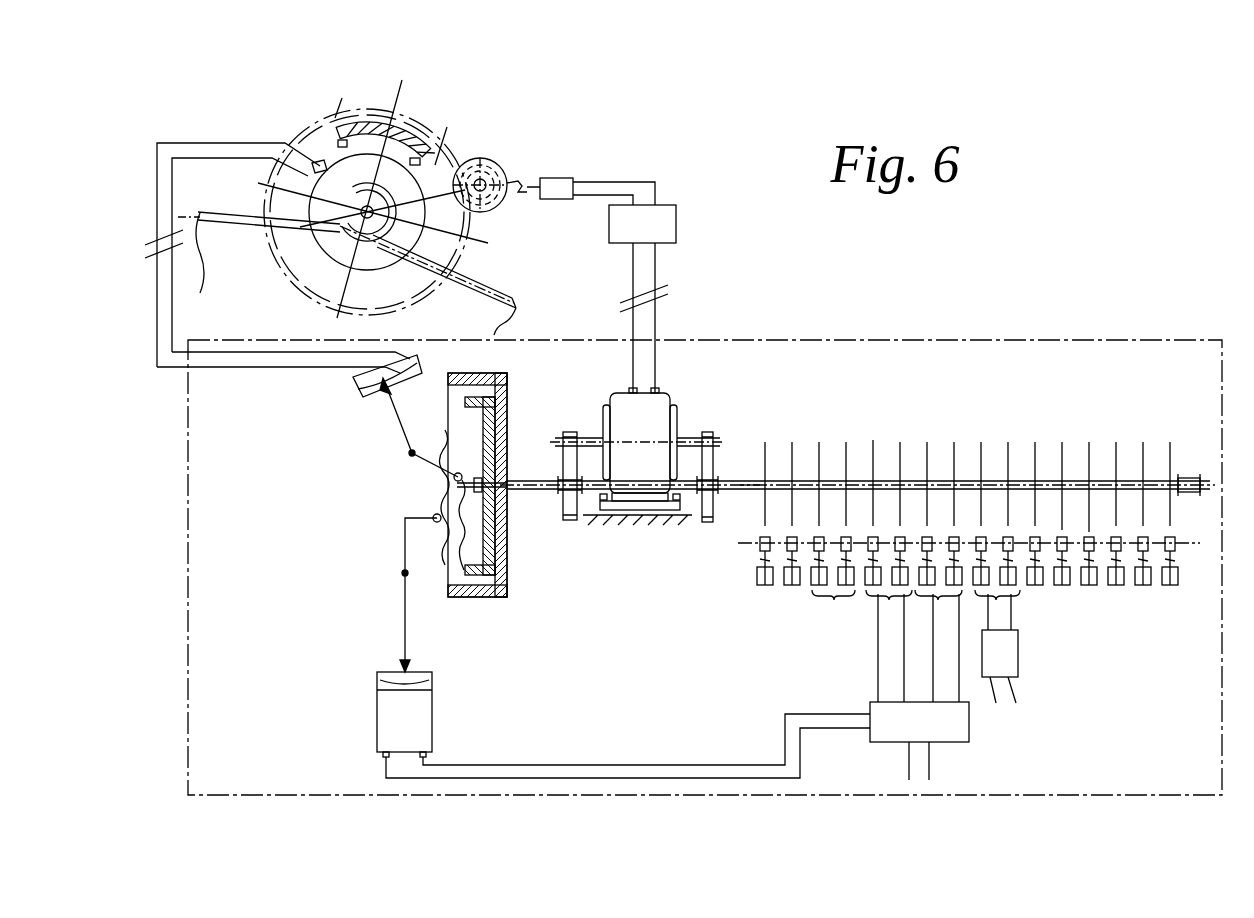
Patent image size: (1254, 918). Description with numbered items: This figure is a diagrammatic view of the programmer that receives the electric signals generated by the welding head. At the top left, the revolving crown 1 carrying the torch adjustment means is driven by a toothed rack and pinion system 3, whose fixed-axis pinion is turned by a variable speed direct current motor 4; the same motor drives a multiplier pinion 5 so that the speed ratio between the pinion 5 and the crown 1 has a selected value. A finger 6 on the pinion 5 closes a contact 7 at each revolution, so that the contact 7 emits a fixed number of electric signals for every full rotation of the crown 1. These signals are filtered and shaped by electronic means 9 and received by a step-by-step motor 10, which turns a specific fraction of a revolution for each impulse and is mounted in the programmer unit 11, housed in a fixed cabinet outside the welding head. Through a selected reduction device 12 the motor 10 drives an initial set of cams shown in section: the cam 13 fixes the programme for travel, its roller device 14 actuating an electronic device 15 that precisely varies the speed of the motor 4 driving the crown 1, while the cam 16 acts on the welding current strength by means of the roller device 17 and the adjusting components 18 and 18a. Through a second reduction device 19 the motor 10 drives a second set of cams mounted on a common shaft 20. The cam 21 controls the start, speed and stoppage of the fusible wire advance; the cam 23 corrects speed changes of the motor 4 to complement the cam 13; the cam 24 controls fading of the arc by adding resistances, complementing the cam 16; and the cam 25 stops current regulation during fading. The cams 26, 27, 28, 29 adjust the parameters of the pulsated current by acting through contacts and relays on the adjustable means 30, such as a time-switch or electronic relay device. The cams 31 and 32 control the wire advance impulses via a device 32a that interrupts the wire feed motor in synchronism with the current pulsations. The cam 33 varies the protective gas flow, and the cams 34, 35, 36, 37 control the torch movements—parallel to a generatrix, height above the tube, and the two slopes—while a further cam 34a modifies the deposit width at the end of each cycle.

The crown 1 is at (467, 298).
The toothed rack and pinion system 3 is at (373, 212).
The variable speed motor 4 is at (259, 238).
The pinion 5 is at (481, 178).
The finger 6 is at (520, 180).
The contact 7 is at (560, 180).
The filtering and shaping means 9 is at (676, 222).
The step-by-step motor 10 is at (620, 395).
The programmer 11 is at (796, 340).
The reduction device 12 is at (567, 522).
The cam 13 is at (463, 423).
The roller device 14 is at (396, 428).
The electronic device 15 is at (352, 381).
The cam 16 is at (445, 576).
The roller device 17 is at (405, 555).
The adjusting component 18 is at (432, 678).
The adjusting component 18a is at (432, 723).
The reduction device 19 is at (706, 524).
The shaft 20 is at (748, 492).
The cam 21 is at (765, 442).
The cam 23 is at (792, 442).
The cam 24 is at (819, 442).
The cam 25 is at (846, 442).
The cam 26 is at (873, 442).
The cam 27 is at (900, 442).
The cam 28 is at (927, 442).
The cam 29 is at (954, 442).
The adjustable means 30 is at (872, 705).
The cam 31 is at (981, 442).
The cam 32 is at (1008, 442).
The device 32a is at (1018, 650).
The cam 33 is at (1035, 442).
The cam 34 is at (1062, 442).
The cam 34a is at (1170, 442).
The cam 35 is at (1089, 442).
The cam 36 is at (1116, 442).
The cam 37 is at (1143, 442).